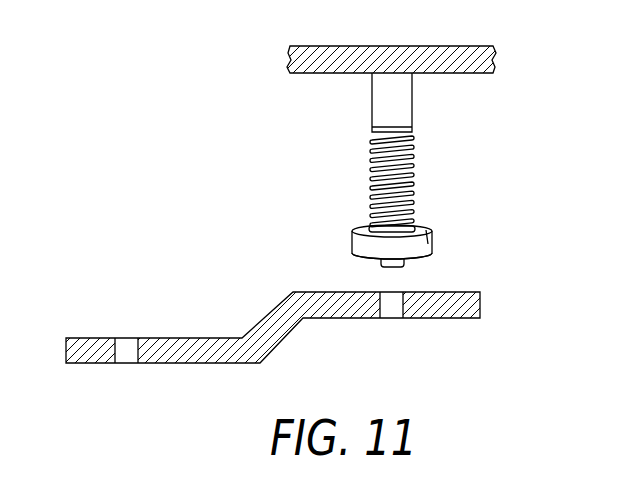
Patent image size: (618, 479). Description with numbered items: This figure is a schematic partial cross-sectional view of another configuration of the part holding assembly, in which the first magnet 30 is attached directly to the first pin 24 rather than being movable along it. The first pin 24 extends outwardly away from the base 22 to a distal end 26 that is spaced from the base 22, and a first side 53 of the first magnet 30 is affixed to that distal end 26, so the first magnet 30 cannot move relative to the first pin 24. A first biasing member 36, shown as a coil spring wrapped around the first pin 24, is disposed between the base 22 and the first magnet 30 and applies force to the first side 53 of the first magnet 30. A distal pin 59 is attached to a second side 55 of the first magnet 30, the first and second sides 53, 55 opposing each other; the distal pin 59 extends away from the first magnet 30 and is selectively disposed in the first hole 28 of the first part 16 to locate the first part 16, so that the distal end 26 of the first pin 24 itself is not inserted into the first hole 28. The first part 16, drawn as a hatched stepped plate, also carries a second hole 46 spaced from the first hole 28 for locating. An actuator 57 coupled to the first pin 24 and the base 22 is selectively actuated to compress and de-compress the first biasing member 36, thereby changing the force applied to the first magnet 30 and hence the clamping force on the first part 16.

The base 22 is at (393, 55).
The actuator 57 is at (413, 110).
The first pin 24 is at (386, 181).
The first biasing member 36 is at (408, 162).
The first side 53 is at (421, 231).
The distal end 26 is at (376, 243).
The first magnet 30 is at (406, 222).
The second side 55 is at (418, 262).
The distal pin 59 is at (392, 268).
The first part 16 is at (278, 348).
The first hole 28 is at (115, 345).
The second hole 46 is at (381, 311).